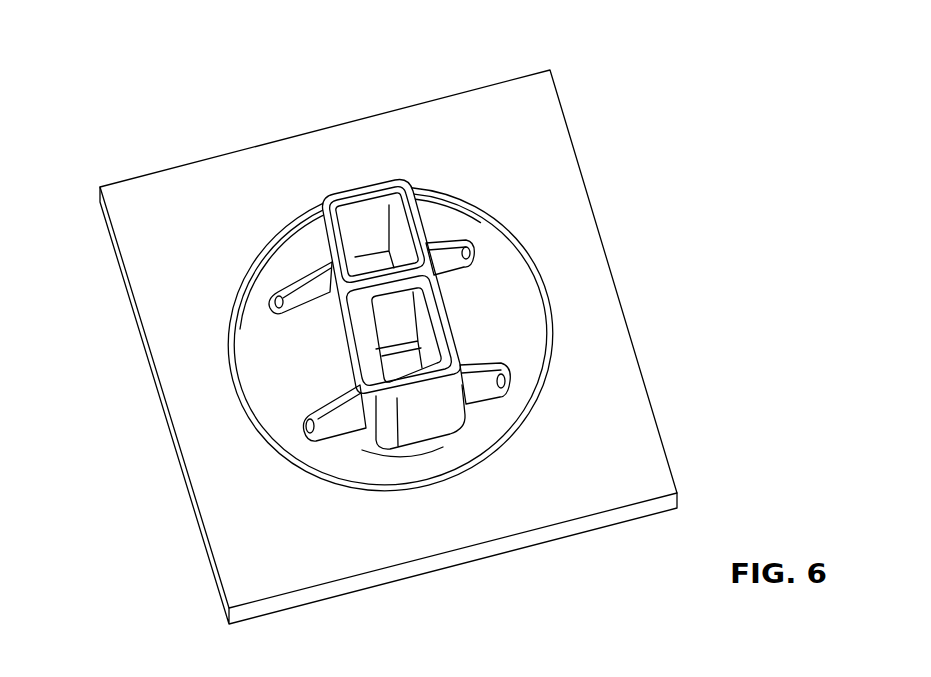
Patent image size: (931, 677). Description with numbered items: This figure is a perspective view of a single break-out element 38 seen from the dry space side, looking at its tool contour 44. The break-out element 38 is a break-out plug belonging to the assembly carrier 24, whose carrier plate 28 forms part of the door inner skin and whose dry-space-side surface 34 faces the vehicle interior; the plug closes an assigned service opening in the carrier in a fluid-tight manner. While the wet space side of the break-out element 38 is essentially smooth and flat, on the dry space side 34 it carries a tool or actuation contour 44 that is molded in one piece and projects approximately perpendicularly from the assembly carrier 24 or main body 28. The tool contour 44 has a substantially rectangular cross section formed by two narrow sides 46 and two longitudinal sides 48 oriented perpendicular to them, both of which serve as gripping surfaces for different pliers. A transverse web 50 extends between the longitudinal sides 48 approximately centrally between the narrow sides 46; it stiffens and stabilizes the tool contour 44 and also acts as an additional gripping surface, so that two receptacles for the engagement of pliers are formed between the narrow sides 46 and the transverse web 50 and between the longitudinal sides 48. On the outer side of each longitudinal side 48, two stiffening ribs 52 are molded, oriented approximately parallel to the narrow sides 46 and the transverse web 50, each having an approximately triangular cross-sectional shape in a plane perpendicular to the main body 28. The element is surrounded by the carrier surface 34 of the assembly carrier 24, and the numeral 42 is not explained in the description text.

The assembly carrier 24 is at (630, 398).
The carrier plate 28 is at (438, 347).
The dry-space-side surface 34 is at (610, 339).
The break-out element 38 is at (490, 273).
The post 42 is at (484, 216).
The tool contour 44 is at (435, 228).
The narrow sides 46 is at (368, 218).
The longitudinal sides 48 is at (445, 302).
The transverse web 50 is at (388, 290).
The stiffening ribs 52 is at (450, 238).